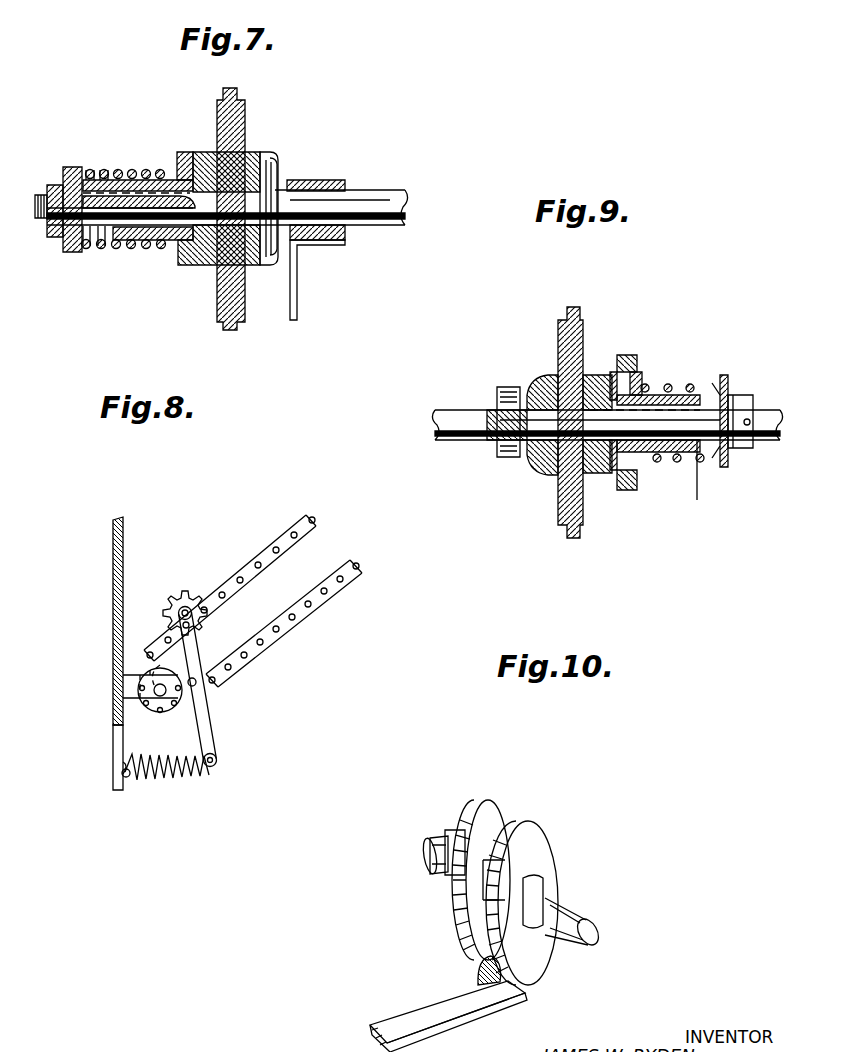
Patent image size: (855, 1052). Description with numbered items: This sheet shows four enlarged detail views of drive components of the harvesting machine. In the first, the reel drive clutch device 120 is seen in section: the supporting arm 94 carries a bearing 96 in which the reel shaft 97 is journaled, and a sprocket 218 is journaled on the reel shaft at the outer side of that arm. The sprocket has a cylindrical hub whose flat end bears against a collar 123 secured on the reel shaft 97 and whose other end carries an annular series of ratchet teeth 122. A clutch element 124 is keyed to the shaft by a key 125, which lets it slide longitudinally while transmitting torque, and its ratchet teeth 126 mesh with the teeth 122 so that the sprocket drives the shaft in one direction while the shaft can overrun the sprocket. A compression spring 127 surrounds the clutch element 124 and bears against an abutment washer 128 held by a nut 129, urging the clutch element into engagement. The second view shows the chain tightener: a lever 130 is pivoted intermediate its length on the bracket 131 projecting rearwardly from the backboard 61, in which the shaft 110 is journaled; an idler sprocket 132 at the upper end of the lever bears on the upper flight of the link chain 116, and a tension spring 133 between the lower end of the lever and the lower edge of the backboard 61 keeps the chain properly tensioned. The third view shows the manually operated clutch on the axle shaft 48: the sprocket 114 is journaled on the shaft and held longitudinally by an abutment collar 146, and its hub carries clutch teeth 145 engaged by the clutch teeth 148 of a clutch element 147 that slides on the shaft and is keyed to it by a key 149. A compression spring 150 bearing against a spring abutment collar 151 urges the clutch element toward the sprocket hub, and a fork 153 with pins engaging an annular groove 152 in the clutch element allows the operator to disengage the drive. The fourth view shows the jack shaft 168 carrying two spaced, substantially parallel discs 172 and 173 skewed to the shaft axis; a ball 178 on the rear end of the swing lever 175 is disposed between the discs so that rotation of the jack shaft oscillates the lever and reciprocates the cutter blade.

In FIG. 9, the axle shaft 48 is at (464, 413).
In FIG. 8, the backboard 61 is at (113, 630).
In FIG. 7, the supporting arm 94 is at (291, 300).
In FIG. 7, the bearing 96 is at (328, 181).
In FIG. 7, the reel shaft 97 is at (374, 193).
In FIG. 8, the shaft 110 is at (150, 690).
In FIG. 9, the sprocket 114 is at (560, 345).
In FIG. 8, the link chain 116 is at (330, 596).
In FIG. 7, the clutch device 120 is at (268, 150).
In FIG. 7, the ratchet teeth 122 is at (206, 266).
In FIG. 7, the collar 123 is at (278, 163).
In FIG. 7, the clutch element 124 is at (177, 181).
In FIG. 7, the key 125 is at (112, 171).
In FIG. 7, the ratchet teeth 126 is at (183, 155).
In FIG. 7, the compression spring 127 is at (145, 250).
In FIG. 7, the abutment washer 128 is at (72, 167).
In FIG. 7, the nut 129 is at (62, 187).
In FIG. 8, the lever 130 is at (195, 735).
In FIG. 8, the bracket 131 is at (145, 670).
In FIG. 8, the idler sprocket 132 is at (195, 590).
In FIG. 8, the tension spring 133 is at (175, 784).
In FIG. 9, the clutch teeth 145 is at (613, 372).
In FIG. 9, the abutment collar 146 is at (532, 385).
In FIG. 9, the clutch element 147 is at (694, 480).
In FIG. 9, the clutch teeth 148 is at (615, 474).
In FIG. 9, the key 149 is at (655, 386).
In FIG. 9, the compression spring 150 is at (677, 455).
In FIG. 9, the spring abutment collar 151 is at (732, 470).
In FIG. 9, the annular groove 152 is at (637, 365).
In FIG. 9, the fork 153 is at (630, 360).
In FIG. 10, the jack shaft 168 is at (580, 916).
In FIG. 10, the disc 172 is at (505, 830).
In FIG. 10, the disc 173 is at (553, 868).
In FIG. 10, the swing lever 175 is at (402, 1005).
In FIG. 10, the ball 178 is at (492, 990).
In FIG. 7, the sprocket 218 is at (226, 130).